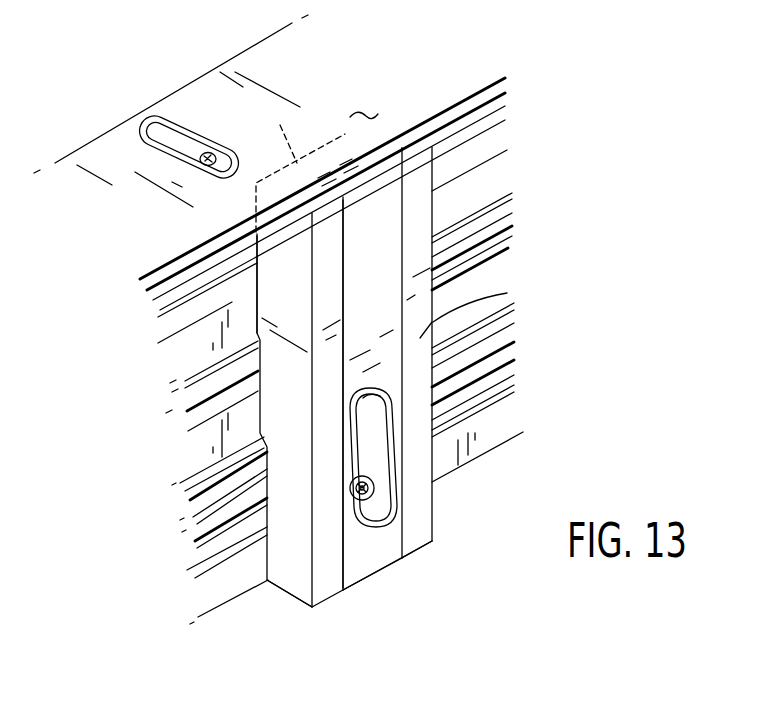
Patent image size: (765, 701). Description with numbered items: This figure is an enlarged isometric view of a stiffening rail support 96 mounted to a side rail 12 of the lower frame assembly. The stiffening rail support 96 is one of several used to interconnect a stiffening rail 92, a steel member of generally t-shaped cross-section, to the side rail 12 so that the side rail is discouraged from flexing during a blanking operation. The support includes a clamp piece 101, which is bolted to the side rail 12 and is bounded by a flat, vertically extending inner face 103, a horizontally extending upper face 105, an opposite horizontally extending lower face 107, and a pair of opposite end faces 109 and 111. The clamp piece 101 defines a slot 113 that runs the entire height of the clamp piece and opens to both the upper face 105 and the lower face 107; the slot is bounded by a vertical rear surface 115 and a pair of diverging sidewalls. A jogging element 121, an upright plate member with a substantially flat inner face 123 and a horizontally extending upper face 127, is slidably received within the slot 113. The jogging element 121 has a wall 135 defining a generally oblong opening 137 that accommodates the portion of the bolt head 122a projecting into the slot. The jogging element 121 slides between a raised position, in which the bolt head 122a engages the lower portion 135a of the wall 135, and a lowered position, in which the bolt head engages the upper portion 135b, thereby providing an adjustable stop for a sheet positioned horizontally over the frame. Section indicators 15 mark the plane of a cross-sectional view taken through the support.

The side rail 12 is at (208, 613).
The section line 15 is at (380, 60).
The stiffening rail 92 is at (170, 95).
The stiffening rail support 96 is at (298, 603).
The clamp piece 101 is at (421, 552).
The inner face 103 is at (508, 272).
The upper face 105 is at (280, 125).
The lower face 107 is at (280, 588).
The end face 109 is at (299, 307).
The end face 111 is at (436, 367).
The slot 113 is at (388, 157).
The rear surface 115 is at (273, 101).
The jogging element 121 is at (376, 577).
The bolt head 122a is at (363, 490).
The inner face 123 is at (353, 277).
The upper face 127 is at (400, 175).
The wall 135 is at (383, 445).
The lower portion of wall 135a is at (365, 514).
The upper portion of wall 135b is at (363, 398).
The oblong opening 137 is at (372, 428).